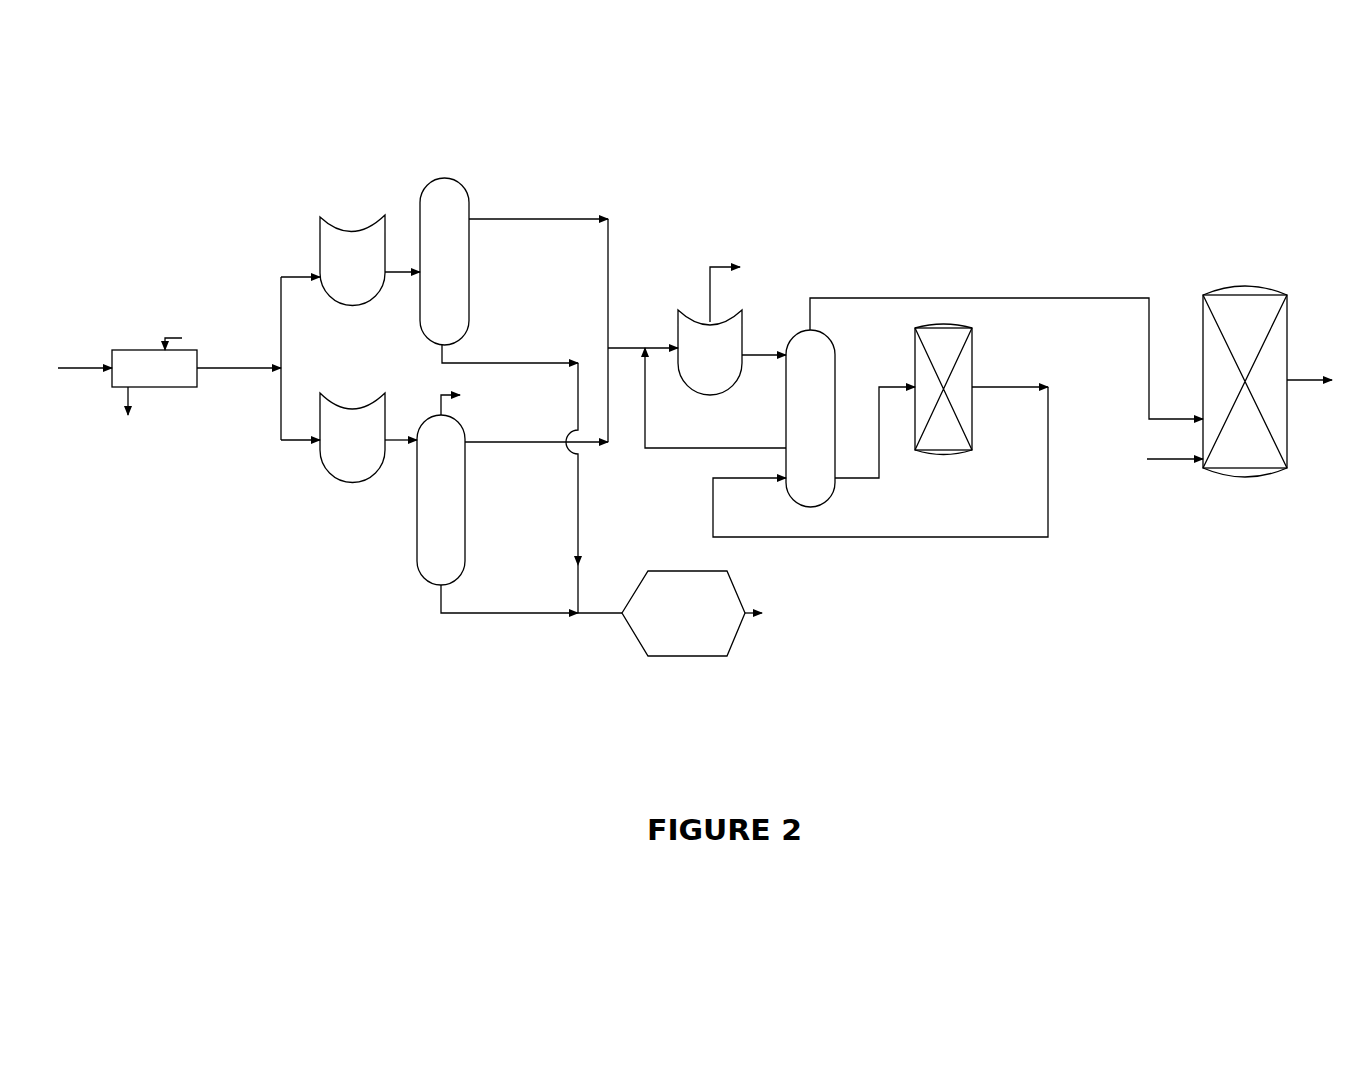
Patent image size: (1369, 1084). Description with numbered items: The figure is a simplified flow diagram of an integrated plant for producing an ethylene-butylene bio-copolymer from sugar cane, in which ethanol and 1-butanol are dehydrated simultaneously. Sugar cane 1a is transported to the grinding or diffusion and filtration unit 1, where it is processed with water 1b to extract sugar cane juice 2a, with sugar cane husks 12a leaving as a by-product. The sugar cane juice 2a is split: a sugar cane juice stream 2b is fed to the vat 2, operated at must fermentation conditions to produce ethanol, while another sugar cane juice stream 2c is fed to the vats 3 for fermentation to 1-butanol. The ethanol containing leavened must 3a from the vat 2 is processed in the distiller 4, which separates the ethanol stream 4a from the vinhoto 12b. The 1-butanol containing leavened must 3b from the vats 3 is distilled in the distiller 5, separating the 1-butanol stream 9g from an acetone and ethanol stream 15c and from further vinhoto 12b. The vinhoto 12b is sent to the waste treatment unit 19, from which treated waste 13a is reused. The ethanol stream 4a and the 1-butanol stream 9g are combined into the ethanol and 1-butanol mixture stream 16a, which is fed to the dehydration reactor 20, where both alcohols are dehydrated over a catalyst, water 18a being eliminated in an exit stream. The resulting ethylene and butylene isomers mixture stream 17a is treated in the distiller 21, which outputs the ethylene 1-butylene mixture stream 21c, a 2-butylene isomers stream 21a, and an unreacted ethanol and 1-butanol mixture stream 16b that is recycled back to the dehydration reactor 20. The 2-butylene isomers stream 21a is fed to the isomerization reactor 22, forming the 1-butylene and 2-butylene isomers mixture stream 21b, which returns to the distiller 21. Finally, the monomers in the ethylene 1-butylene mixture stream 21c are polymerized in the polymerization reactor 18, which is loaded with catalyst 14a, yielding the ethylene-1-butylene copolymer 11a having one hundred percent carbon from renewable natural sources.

The grinding or diffusion and filtration unit 1 is at (135, 350).
The sugar cane 1a is at (85, 356).
The water 1b is at (183, 333).
The sugar cane husks 12a is at (139, 416).
The sugar cane juice 2a is at (239, 358).
The sugar cane juice stream 2b is at (295, 260).
The sugar cane juice stream 2c is at (295, 453).
The vat 2 is at (320, 237).
The vats 3 is at (320, 462).
The leavened must 3a is at (402, 256).
The leavened must 3b is at (401, 428).
The distiller 4 is at (420, 200).
The distiller 5 is at (418, 572).
The ethanol stream 4a is at (538, 319).
The vinhoto 12b is at (531, 479).
The acetone and ethanol stream 15c is at (470, 399).
The 1-butanol stream 9g is at (536, 431).
The waste treatment unit 19 is at (732, 580).
The treated waste 13a is at (775, 608).
The ethanol and 1-butanol mixture stream 16a is at (643, 340).
The unreacted ethanol and 1-butanol mixture stream 16b is at (715, 398).
The dehydration reactor 20 is at (678, 320).
The water 18a is at (745, 290).
The ethylene and butylene isomers mixture stream 17a is at (764, 345).
The distiller 21 is at (795, 332).
The ethylene 1-butylene mixture stream 21c is at (1006, 348).
The 2-butylene isomers stream 21a is at (875, 422).
The 1-butylene and 2-butylene isomers mixture stream 21b is at (880, 451).
The isomerization reactor 22 is at (975, 342).
The polymerization reactor 18 is at (1270, 286).
The ethylene-1-butylene copolymer 11a is at (1321, 368).
The catalyst 14a is at (1156, 461).